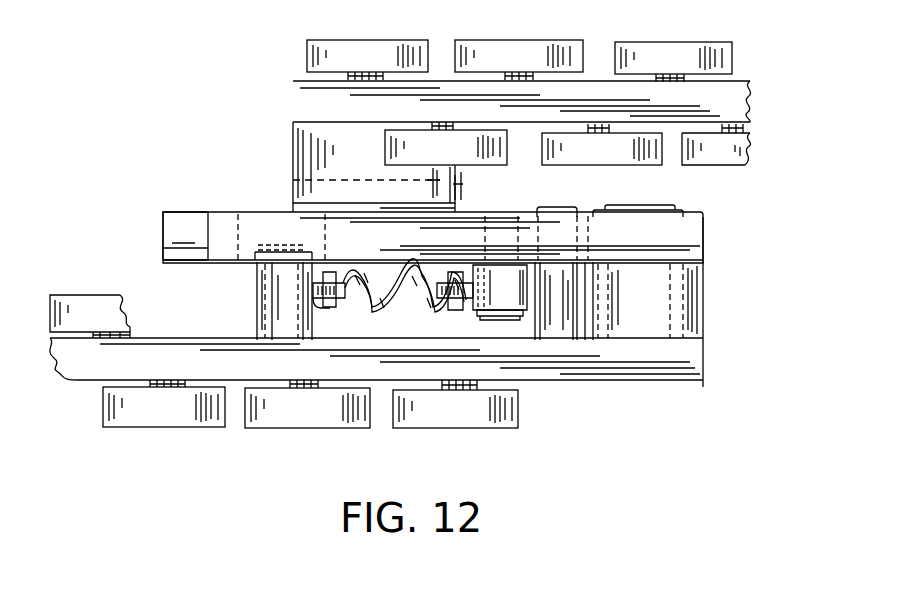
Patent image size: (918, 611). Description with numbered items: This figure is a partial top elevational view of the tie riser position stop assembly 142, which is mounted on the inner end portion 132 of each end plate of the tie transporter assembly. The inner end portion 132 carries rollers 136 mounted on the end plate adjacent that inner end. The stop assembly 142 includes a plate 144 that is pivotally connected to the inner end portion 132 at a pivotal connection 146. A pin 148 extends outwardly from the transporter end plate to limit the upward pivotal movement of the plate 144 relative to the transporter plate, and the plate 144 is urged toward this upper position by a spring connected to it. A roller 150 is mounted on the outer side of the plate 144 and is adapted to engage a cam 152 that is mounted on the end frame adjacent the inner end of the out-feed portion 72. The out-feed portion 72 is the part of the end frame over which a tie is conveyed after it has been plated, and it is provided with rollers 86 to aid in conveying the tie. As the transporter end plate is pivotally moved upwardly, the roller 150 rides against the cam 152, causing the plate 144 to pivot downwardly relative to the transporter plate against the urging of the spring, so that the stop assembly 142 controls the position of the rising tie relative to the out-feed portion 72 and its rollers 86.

The out-feed portion 72 is at (705, 120).
The rollers 86 is at (438, 146).
The inner end portion 132 is at (672, 365).
The rollers 136 is at (510, 422).
The tie riser position stop assembly 142 is at (168, 207).
The plate 144 is at (281, 229).
The pivotal connection 146 is at (672, 298).
The pin 148 is at (557, 287).
The roller 150 is at (343, 190).
The cam 152 is at (347, 153).